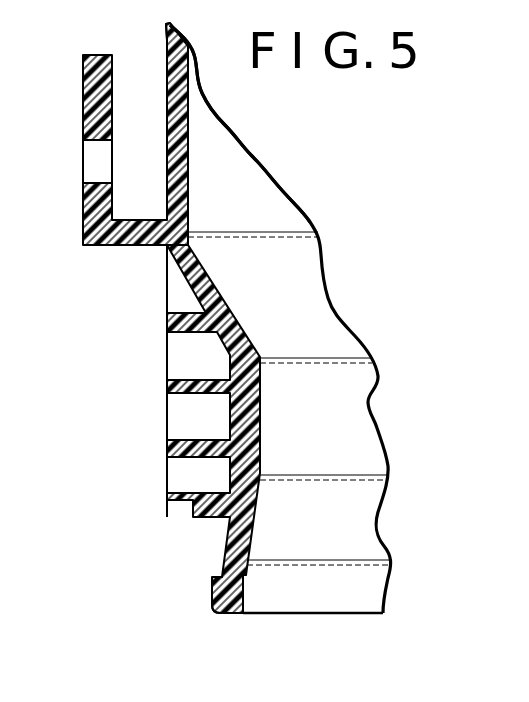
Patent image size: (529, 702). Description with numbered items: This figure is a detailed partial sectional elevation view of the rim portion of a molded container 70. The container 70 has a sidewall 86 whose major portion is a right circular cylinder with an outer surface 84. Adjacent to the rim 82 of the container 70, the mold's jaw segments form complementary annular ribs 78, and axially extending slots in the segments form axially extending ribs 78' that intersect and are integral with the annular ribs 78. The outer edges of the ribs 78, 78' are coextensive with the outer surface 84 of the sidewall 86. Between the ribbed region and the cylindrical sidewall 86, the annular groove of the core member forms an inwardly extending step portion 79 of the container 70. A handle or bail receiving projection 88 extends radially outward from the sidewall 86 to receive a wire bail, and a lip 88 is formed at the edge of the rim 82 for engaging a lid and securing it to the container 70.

The container 70 is at (368, 322).
The annular ribs 78 is at (162, 399).
The axially extending ribs 78' is at (156, 398).
The step portion 79 is at (262, 431).
The rim 82 is at (228, 614).
The outer surface 84 is at (167, 88).
The sidewall 86 is at (188, 136).
The bail receiving projection 88 is at (92, 222).